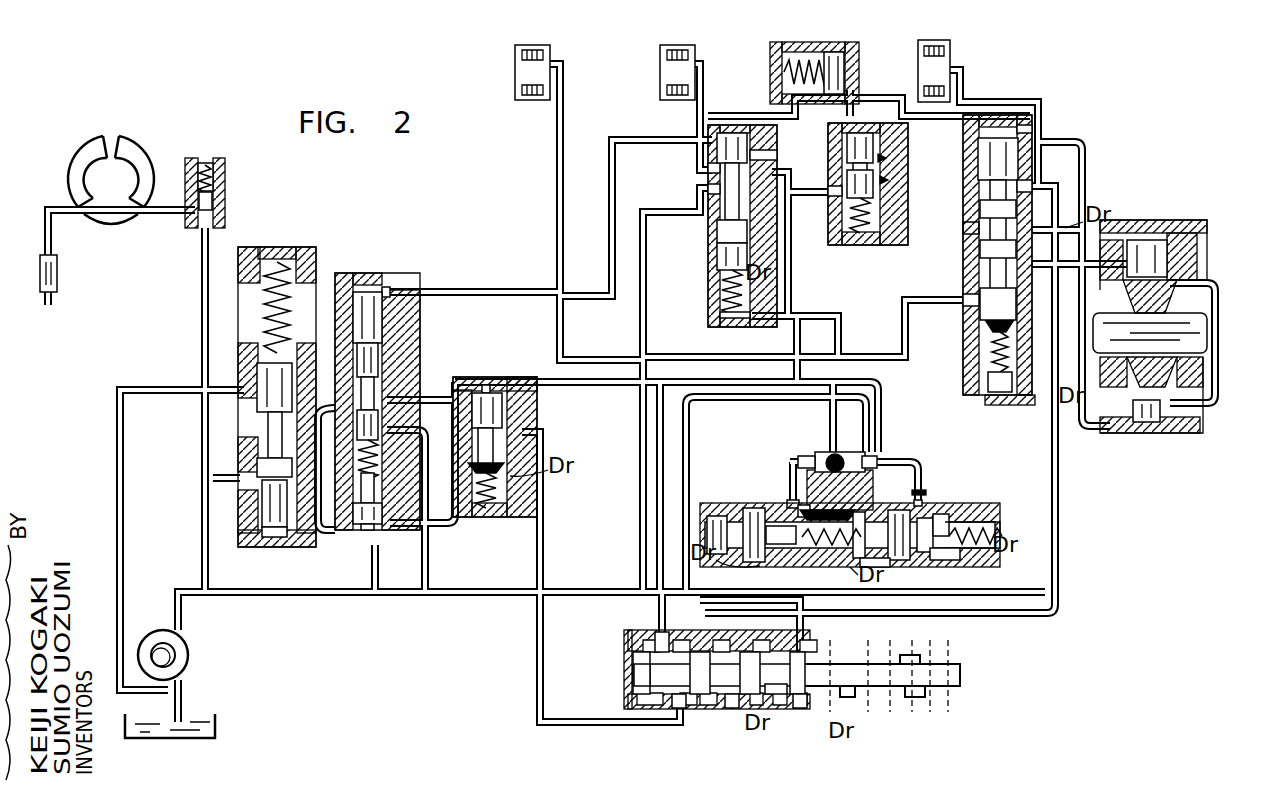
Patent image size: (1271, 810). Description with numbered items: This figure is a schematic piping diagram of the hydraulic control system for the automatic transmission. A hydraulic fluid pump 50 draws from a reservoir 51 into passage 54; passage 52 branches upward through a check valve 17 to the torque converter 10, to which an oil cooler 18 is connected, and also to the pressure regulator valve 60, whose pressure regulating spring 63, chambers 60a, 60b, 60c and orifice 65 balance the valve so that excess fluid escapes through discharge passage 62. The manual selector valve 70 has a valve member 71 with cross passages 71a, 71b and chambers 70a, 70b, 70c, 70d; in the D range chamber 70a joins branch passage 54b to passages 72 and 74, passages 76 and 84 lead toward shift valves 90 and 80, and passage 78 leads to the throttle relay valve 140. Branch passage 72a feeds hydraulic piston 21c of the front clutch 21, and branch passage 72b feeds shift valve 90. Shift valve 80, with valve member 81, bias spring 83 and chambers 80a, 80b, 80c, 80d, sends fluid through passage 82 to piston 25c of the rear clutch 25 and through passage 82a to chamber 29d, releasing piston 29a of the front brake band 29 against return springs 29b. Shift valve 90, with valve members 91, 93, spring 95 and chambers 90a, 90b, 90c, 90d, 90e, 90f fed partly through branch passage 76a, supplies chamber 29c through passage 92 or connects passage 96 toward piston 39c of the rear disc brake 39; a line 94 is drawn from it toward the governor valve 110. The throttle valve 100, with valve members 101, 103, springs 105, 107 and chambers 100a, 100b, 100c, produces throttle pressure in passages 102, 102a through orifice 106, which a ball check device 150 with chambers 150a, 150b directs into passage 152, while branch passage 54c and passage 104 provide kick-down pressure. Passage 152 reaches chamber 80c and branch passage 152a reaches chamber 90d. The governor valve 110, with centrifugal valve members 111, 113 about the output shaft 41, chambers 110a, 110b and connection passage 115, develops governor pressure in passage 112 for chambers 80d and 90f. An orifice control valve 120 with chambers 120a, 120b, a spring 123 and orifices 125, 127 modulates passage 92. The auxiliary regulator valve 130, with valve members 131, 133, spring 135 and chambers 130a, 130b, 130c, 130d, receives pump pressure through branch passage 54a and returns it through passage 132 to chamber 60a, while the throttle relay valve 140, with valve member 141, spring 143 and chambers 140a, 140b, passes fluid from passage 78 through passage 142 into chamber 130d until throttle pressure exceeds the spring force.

The torque converter 10 is at (98, 162).
The check valve 17 is at (205, 168).
The oil cooler 18 is at (58, 262).
The front clutch 21 is at (512, 70).
The hydraulic piston 21c is at (552, 70).
The rear clutch 25 is at (656, 66).
The hydraulic piston 25c is at (712, 58).
The front brake band 29 is at (782, 55).
The hydraulic piston 29a is at (840, 52).
The return springs 29b is at (800, 52).
The chamber 29c is at (850, 98).
The chamber 29d is at (818, 110).
The rear disc brake 39 is at (915, 70).
The hydraulic piston 39c is at (958, 68).
The output shaft 41 is at (1205, 332).
The hydraulic fluid pump 50 is at (148, 634).
The hydraulic fluid reservoir 51 is at (215, 714).
The passage 52 is at (200, 522).
The passage 54 is at (302, 596).
The branch passage 54a is at (470, 548).
The branch passage 54b is at (634, 590).
The branch passage 54c is at (745, 600).
The pressure regulator valve 60 is at (278, 262).
The hydraulic fluid chamber 60a is at (258, 540).
The hydraulic fluid chamber 60b is at (262, 498).
The hydraulic fluid chamber 60c is at (258, 395).
The discharge passage 62 is at (115, 522).
The pressure regulating spring 63 is at (266, 302).
The orifice 65 is at (213, 478).
The manual selector valve 70 is at (625, 648).
The chamber 70a is at (650, 640).
The chamber 70b is at (640, 700).
The chamber 70c is at (730, 707).
The chamber 70d is at (795, 705).
The valve member 71 is at (860, 700).
The cross passage 71a is at (775, 692).
The cross passage 71b is at (634, 672).
The passage 72 is at (640, 468).
The branch passage 72a is at (557, 325).
The branch passage 72b is at (705, 360).
The passage 74 is at (655, 520).
The passage 76 is at (1052, 548).
The branch passage 76a is at (1040, 400).
The passage 78 is at (535, 668).
The shift valve 80 is at (733, 128).
The chamber 80a is at (712, 230).
The chamber 80b is at (708, 190).
The chamber 80c is at (720, 318).
The chamber 80d is at (752, 152).
The valve member 81 is at (710, 254).
The passage 82 is at (708, 166).
The passage 82a is at (758, 112).
The bias spring 83 is at (712, 296).
The passage 84 is at (790, 258).
The shift valve 90 is at (1000, 128).
The chamber 90a is at (1020, 180).
The chamber 90b is at (968, 228).
The chamber 90c is at (966, 300).
The chamber 90d is at (1075, 400).
The chamber 90e is at (985, 385).
The chamber 90f is at (1035, 128).
The valve member 91 is at (990, 160).
The passage 92 is at (905, 272).
The valve member 93 is at (995, 368).
The line 94 is at (1118, 268).
The bias spring 95 is at (985, 335).
The passage 96 is at (1040, 112).
The throttle valve 100 is at (728, 506).
The chamber 100a is at (870, 567).
The chamber 100b is at (790, 508).
The chamber 100c is at (940, 550).
The valve member 101 is at (745, 508).
The passage 102 is at (420, 578).
The passage 102a is at (918, 480).
The valve member 103 is at (925, 520).
The passage 104 is at (795, 462).
The spring 105 is at (825, 522).
The orifice 106 is at (922, 496).
The bias spring 107 is at (975, 522).
The governor valve 110 is at (1153, 230).
The chamber 110a is at (1087, 215).
The chamber 110b is at (1192, 410).
The centrifugal valve member 111 is at (1170, 258).
The passage 112 is at (612, 214).
The centrifugal valve member 113 is at (1133, 425).
The connection passage 115 is at (1210, 350).
The orifice control valve 120 is at (920, 122).
The chamber 120a is at (900, 205).
The chamber 120b is at (835, 190).
The spring 123 is at (864, 236).
The orifice 125 is at (882, 180).
The orifice 127 is at (880, 158).
The auxiliary regulator valve 130 is at (370, 290).
The chamber 130a is at (385, 290).
The chamber 130b is at (388, 400).
The chamber 130c is at (368, 548).
The chamber 130d is at (377, 580).
The valve member 131 is at (354, 320).
The passage 132 is at (356, 376).
The valve member 133 is at (370, 524).
The spring 135 is at (322, 530).
The throttle relay valve 140 is at (484, 386).
The chamber 140a is at (510, 428).
The chamber 140b is at (500, 392).
The valve member 141 is at (480, 390).
The passage 142 is at (500, 520).
The spring 143 is at (482, 505).
The ball check device 150 is at (826, 456).
The chamber 150a is at (866, 455).
The chamber 150b is at (790, 458).
The passage 152 is at (830, 412).
The branch passage 152a is at (905, 345).